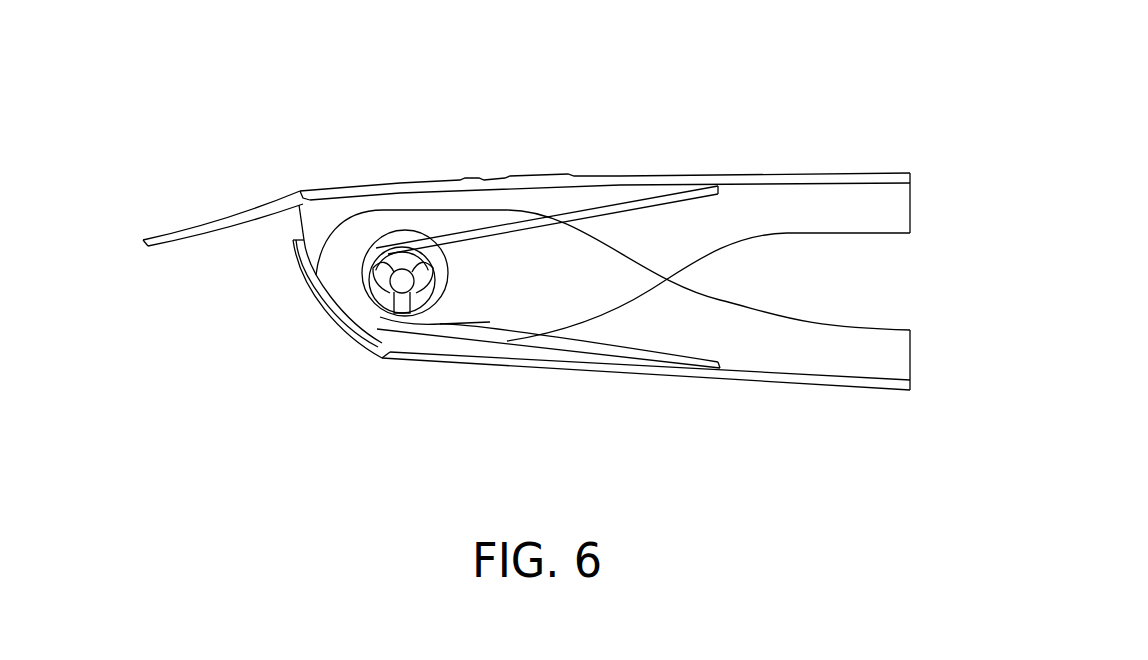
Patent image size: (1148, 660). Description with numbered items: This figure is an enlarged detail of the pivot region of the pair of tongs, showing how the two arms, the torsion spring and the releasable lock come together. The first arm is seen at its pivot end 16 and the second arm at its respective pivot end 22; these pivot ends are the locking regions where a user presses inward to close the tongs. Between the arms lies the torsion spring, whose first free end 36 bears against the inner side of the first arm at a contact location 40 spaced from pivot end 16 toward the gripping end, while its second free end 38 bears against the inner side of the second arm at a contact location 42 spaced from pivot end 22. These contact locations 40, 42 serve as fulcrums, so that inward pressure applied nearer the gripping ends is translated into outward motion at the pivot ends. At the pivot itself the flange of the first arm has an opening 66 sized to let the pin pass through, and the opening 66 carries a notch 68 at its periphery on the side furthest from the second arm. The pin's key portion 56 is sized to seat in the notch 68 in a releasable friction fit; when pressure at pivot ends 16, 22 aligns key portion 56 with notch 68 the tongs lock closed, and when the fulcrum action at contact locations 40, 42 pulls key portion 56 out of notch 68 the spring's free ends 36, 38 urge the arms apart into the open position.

The pivot end 22 is at (380, 180).
The pivot end 16 is at (452, 363).
The opening 66 is at (440, 250).
The key portion 56 is at (400, 308).
The notch 68 is at (392, 305).
The second free end 38 is at (720, 187).
The contact location 42 is at (735, 190).
The first free end 36 is at (720, 368).
The contact location 40 is at (740, 367).